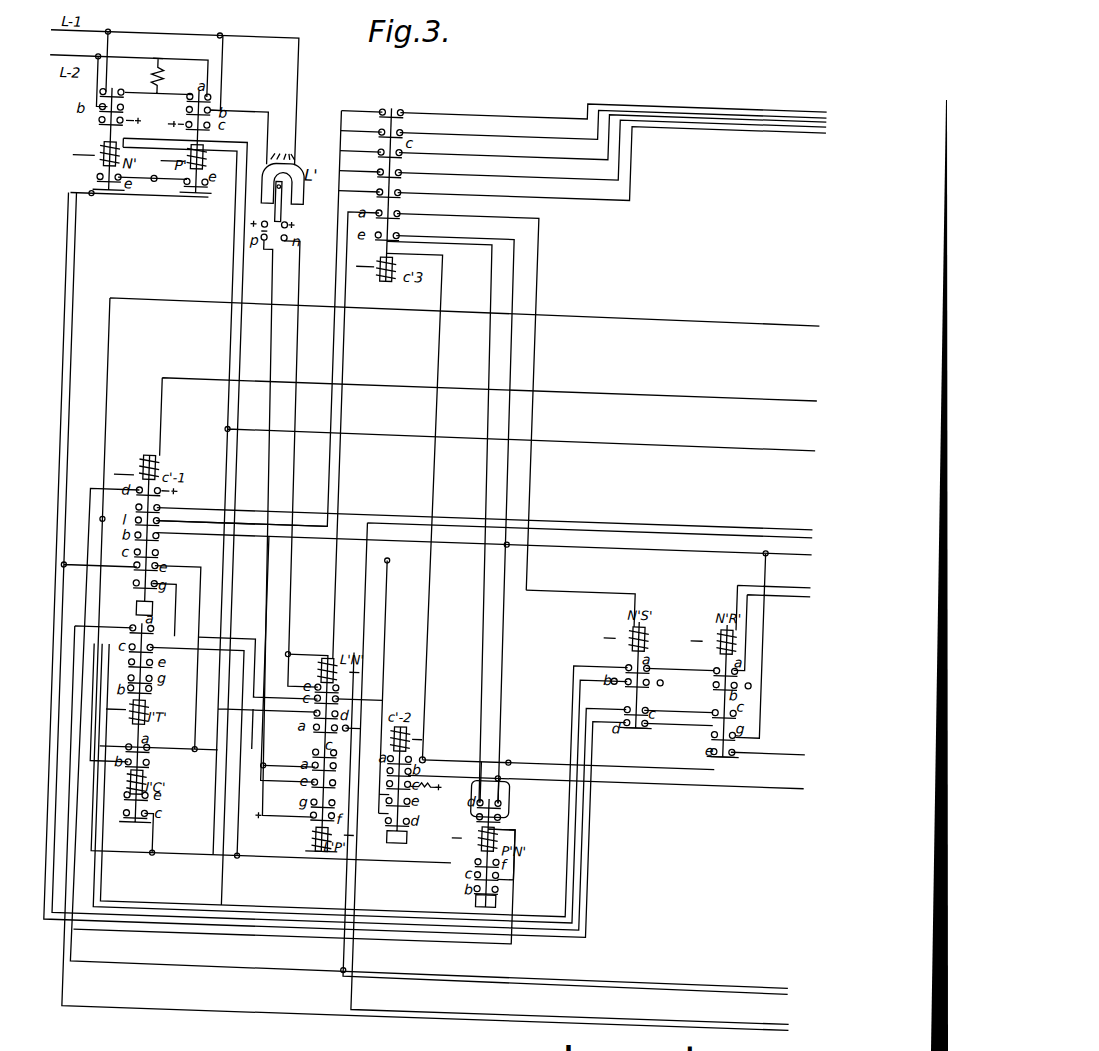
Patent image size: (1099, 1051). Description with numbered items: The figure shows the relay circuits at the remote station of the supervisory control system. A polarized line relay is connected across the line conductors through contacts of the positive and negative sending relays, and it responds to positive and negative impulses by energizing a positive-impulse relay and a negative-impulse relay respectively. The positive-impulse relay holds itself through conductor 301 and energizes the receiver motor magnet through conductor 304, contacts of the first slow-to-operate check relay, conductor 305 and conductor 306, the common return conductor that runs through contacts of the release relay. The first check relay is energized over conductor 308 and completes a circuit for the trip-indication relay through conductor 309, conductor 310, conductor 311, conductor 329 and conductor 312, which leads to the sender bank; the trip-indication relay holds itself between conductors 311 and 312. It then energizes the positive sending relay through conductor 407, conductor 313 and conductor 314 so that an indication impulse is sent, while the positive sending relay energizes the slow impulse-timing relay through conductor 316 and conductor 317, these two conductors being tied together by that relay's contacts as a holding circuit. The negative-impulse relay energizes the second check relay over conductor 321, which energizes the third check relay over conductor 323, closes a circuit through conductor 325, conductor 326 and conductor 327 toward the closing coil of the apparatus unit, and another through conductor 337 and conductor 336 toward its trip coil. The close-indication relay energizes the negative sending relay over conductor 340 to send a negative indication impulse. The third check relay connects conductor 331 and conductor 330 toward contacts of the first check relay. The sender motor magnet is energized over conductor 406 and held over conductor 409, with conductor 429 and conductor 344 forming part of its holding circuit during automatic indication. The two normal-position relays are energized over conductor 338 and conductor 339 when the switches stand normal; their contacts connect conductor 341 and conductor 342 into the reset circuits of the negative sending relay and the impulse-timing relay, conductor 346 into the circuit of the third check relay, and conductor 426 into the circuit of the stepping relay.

The conductor 301 is at (382, 525).
The conductor 304 is at (286, 572).
The conductor 305 is at (284, 533).
The conductor 306 is at (788, 666).
The conductor 308 is at (180, 392).
The conductor 309 is at (159, 737).
The conductor 310 is at (142, 602).
The conductor 311 is at (186, 607).
The conductor 312 is at (158, 294).
The conductor 313 is at (126, 878).
The conductor 314 is at (598, 690).
The conductor 316 is at (72, 451).
The conductor 317 is at (88, 240).
The conductor 321 is at (224, 565).
The conductor 323 is at (546, 751).
The conductor 325 is at (396, 690).
The conductor 326 is at (262, 620).
The conductor 327 is at (178, 1001).
The conductor 329 is at (272, 734).
The conductor 330 is at (206, 520).
The conductor 331 is at (550, 260).
The conductor 336 is at (384, 877).
The conductor 337 is at (406, 800).
The conductor 338 is at (714, 563).
The conductor 339 is at (754, 563).
The conductor 340 is at (248, 138).
The conductor 341 is at (702, 642).
The conductor 342 is at (704, 693).
The conductor 344 is at (349, 467).
The conductor 346 is at (690, 710).
The conductor 406 is at (378, 866).
The conductor 407 is at (242, 250).
The conductor 409 is at (226, 500).
The conductor 426 is at (767, 762).
The conductor 429 is at (584, 137).